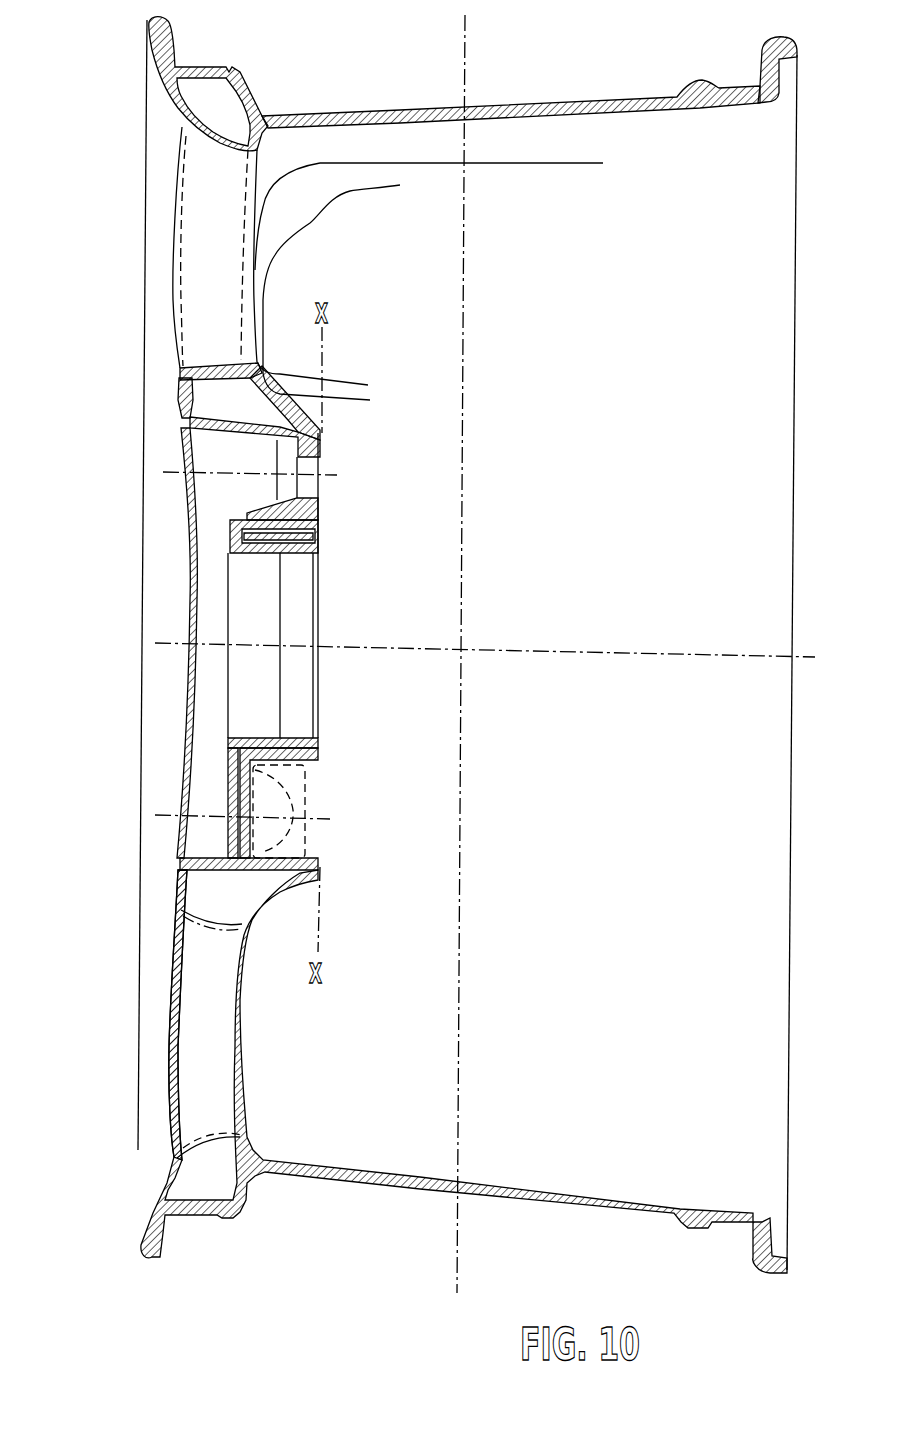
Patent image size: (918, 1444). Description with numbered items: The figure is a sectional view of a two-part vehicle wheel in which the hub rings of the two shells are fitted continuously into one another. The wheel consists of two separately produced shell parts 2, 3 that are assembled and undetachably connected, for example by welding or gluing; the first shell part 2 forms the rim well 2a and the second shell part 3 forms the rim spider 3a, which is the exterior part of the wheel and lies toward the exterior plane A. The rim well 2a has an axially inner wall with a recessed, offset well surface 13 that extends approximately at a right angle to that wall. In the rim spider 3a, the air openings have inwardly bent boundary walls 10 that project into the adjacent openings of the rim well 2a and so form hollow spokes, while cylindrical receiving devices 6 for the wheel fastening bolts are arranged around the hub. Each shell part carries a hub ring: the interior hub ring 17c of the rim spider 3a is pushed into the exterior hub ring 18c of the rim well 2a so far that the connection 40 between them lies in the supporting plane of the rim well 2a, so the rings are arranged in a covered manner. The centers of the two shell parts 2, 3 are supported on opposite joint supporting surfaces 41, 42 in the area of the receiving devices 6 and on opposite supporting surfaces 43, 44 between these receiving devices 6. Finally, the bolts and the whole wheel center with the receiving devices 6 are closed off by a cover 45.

The shell part 2 is at (618, 86).
The rim well 2a is at (357, 113).
The shell part 3 is at (140, 933).
The rim spider 3a is at (170, 1048).
The cylindrical receiving devices 6 is at (213, 453).
The boundary walls 10 is at (193, 133).
The well surface 13 is at (493, 90).
The interior hub ring 17c is at (263, 547).
The exterior hub ring 18c is at (280, 537).
The connection 40 is at (317, 543).
The joint supporting surface 41 is at (310, 445).
The joint supporting surface 42 is at (303, 513).
The supporting surface 43 is at (242, 798).
The supporting surface 44 is at (235, 815).
The cover 45 is at (193, 598).
The exterior plane A is at (145, 290).